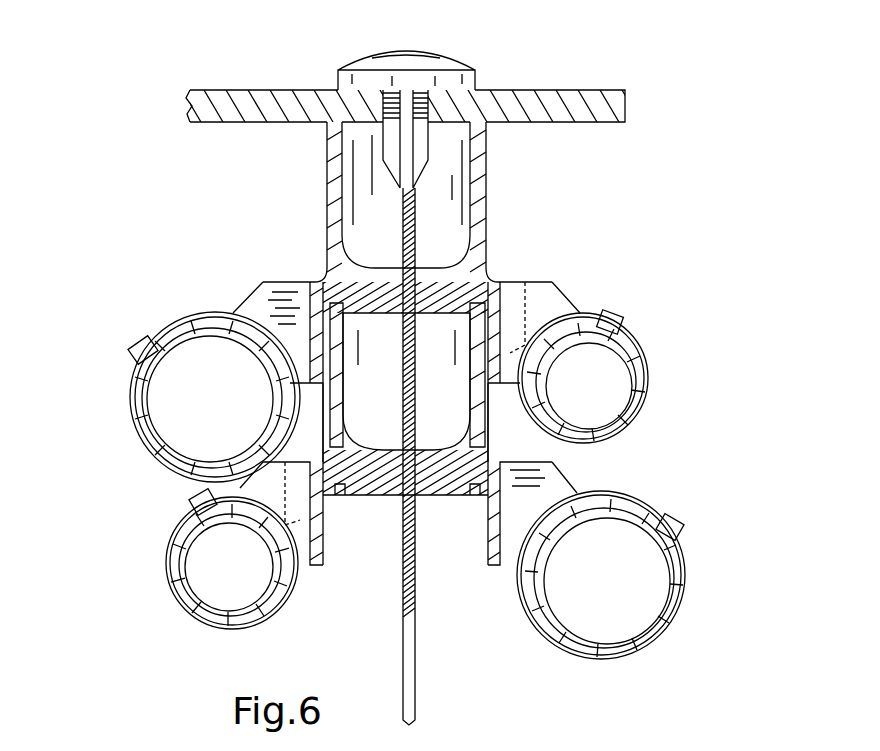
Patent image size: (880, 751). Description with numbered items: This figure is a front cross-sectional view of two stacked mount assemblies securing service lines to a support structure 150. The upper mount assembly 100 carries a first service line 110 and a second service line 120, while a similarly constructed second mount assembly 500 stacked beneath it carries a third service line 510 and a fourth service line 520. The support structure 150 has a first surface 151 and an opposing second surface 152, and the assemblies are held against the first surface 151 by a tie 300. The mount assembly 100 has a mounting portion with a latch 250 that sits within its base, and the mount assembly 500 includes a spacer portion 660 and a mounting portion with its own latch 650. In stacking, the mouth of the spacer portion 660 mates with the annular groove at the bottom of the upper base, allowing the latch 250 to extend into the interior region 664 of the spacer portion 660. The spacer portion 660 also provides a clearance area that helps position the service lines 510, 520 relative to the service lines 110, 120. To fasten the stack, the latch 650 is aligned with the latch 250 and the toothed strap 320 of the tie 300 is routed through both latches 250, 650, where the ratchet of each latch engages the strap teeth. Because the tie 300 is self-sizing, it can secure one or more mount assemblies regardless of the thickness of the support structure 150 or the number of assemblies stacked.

The mount assembly 100 is at (612, 240).
The first service line 110 is at (143, 390).
The second service line 120 is at (638, 375).
The support structure 150 is at (600, 92).
The first surface 151 is at (233, 127).
The second surface 152 is at (222, 88).
The latch 250 is at (425, 323).
The tie 300 is at (487, 73).
The strap 320 is at (413, 689).
The mount assembly 500 is at (670, 465).
The third service line 510 is at (172, 552).
The fourth service line 520 is at (670, 627).
The latch 650 is at (426, 513).
The spacer portion 660 is at (485, 427).
The interior region 664 is at (395, 401).